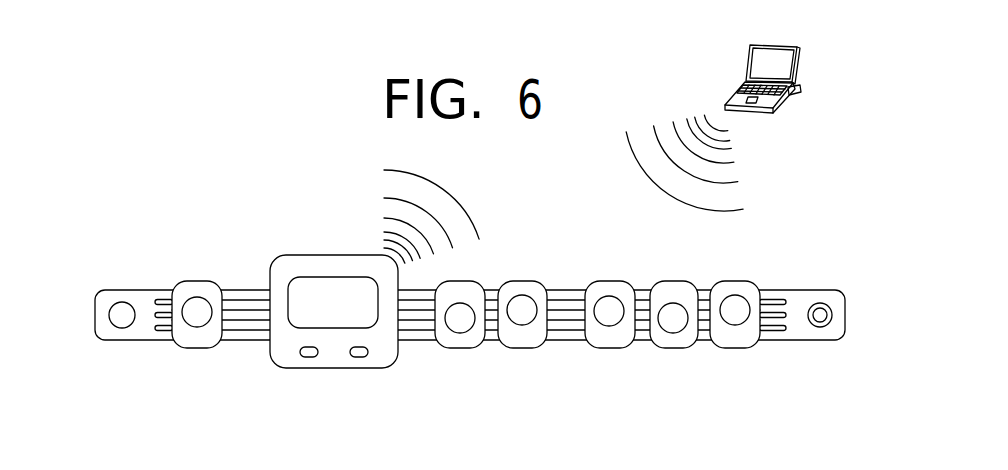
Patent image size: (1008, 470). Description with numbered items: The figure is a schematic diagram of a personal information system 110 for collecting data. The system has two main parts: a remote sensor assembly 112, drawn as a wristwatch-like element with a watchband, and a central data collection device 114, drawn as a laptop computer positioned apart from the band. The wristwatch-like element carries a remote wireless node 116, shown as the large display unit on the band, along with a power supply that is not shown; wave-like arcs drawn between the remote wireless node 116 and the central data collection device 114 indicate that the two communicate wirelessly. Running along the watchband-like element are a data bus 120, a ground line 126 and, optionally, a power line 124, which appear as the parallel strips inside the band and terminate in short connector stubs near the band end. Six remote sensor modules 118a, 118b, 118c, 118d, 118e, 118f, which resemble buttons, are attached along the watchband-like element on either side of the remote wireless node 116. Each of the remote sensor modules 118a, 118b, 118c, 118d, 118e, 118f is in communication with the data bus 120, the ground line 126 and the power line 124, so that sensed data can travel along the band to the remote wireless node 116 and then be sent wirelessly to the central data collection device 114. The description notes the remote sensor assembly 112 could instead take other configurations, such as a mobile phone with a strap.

The personal information system 110 is at (143, 192).
The remote sensor assembly 112 is at (100, 340).
The central data collection device 114 is at (716, 68).
The remote wireless node 116 is at (320, 255).
The remote sensor module 118a is at (198, 348).
The remote sensor module 118b is at (460, 348).
The remote sensor module 118c is at (523, 348).
The remote sensor module 118d is at (610, 281).
The remote sensor module 118e is at (672, 348).
The remote sensor module 118f is at (733, 348).
The data bus 120 is at (787, 315).
The power line 124 is at (772, 333).
The ground line 126 is at (770, 298).